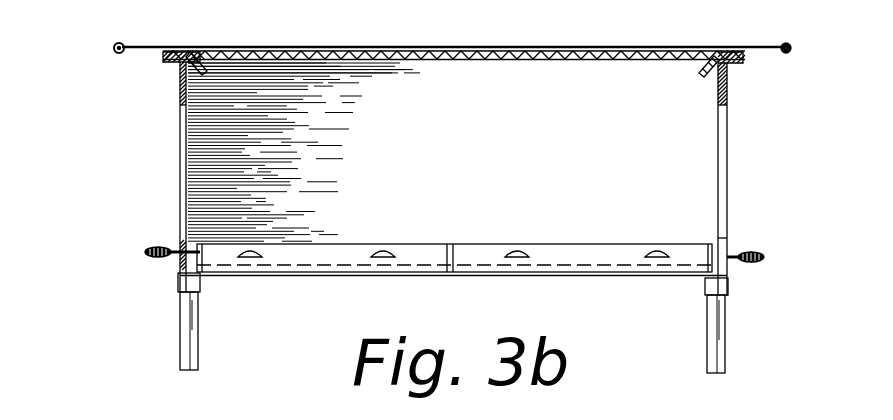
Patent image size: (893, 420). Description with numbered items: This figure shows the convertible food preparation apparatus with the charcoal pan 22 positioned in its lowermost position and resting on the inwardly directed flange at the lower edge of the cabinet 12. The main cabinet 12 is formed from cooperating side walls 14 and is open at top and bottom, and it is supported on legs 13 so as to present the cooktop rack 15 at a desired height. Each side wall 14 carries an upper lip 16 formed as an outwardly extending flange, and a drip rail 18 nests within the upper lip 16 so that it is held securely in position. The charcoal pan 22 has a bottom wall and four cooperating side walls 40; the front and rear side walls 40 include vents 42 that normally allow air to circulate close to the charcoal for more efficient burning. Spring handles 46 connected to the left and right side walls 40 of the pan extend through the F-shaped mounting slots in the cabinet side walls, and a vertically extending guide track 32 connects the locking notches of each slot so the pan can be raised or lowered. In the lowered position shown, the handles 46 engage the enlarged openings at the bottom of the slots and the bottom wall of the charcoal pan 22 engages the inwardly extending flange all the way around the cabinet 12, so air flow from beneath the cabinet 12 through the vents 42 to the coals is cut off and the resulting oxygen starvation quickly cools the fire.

The main cabinet 12 is at (160, 150).
The legs 13 is at (723, 344).
The side wall 14 is at (430, 129).
The cooktop rack 15 is at (575, 45).
The upper lip 16 is at (741, 64).
The drip rail 18 is at (745, 53).
The charcoal pan 22 is at (475, 225).
The guide track 32 is at (726, 203).
The side walls of charcoal pan 40 is at (621, 262).
The vents 42 is at (382, 245).
The spring handles 46 is at (144, 253).